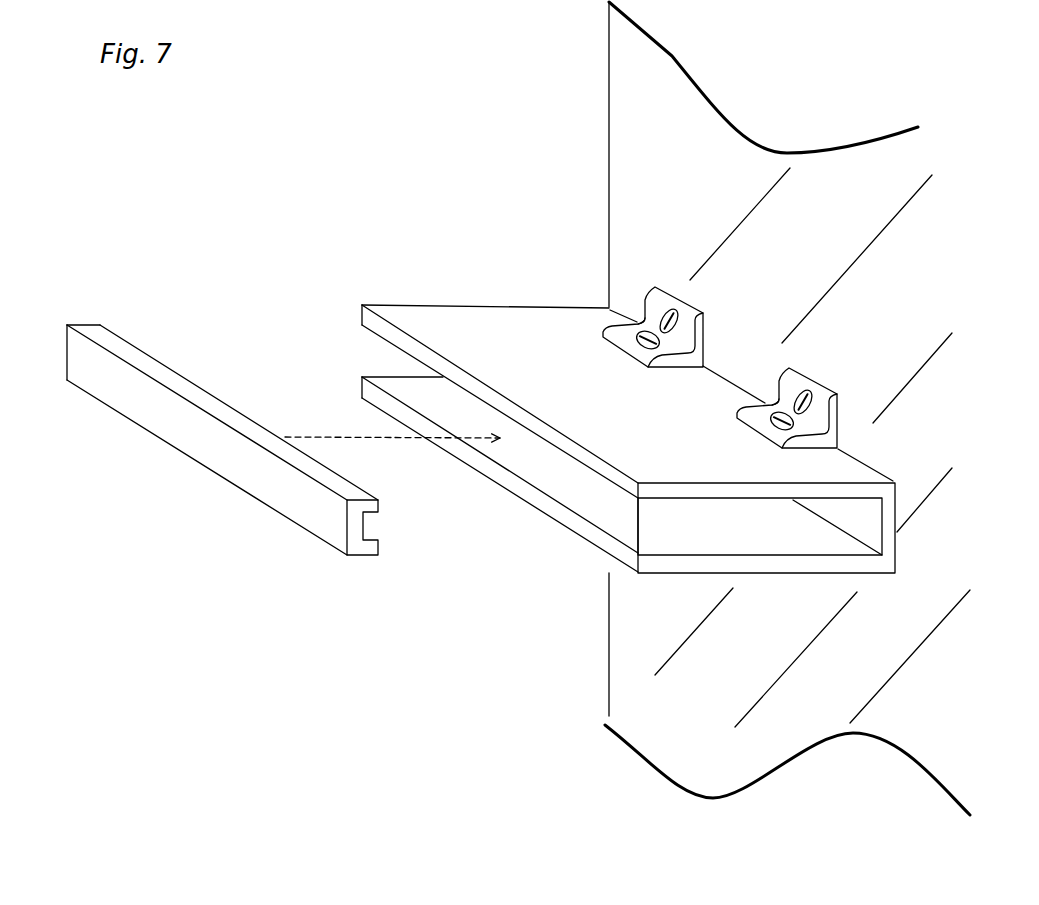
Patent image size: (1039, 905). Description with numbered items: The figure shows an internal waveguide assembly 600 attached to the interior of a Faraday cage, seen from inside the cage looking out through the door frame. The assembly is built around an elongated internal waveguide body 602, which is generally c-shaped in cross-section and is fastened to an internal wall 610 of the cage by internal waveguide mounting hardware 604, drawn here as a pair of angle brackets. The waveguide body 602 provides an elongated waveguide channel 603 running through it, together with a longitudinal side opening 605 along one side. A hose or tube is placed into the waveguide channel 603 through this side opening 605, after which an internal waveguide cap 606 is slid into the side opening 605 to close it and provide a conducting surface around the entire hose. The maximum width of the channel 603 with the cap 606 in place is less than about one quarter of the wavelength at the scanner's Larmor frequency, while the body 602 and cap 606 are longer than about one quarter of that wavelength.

The internal waveguide assembly 600 is at (462, 612).
The internal waveguide body 602 is at (523, 483).
The waveguide channel 603 is at (745, 527).
The internal waveguide mounting hardware 604 is at (653, 302).
The longitudinal side opening 605 is at (583, 487).
The internal waveguide cap 606 is at (250, 460).
The internal wall 610 is at (895, 280).